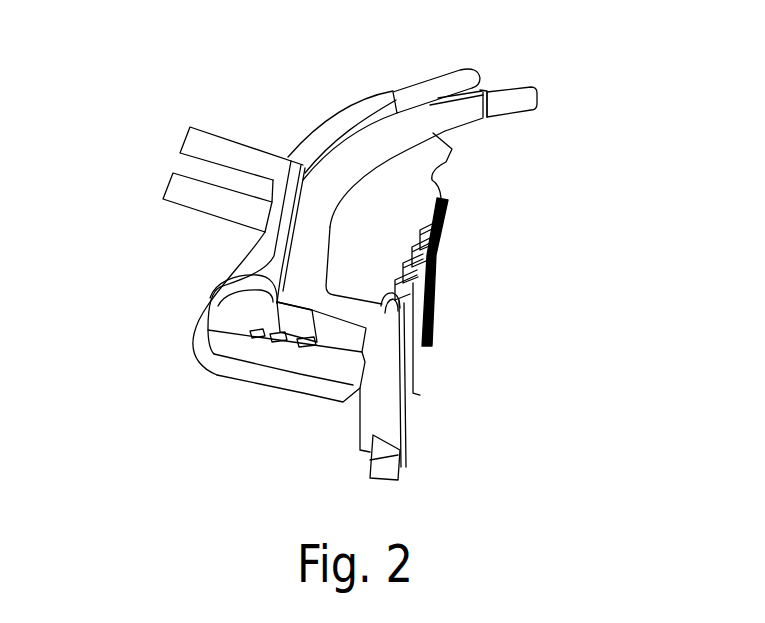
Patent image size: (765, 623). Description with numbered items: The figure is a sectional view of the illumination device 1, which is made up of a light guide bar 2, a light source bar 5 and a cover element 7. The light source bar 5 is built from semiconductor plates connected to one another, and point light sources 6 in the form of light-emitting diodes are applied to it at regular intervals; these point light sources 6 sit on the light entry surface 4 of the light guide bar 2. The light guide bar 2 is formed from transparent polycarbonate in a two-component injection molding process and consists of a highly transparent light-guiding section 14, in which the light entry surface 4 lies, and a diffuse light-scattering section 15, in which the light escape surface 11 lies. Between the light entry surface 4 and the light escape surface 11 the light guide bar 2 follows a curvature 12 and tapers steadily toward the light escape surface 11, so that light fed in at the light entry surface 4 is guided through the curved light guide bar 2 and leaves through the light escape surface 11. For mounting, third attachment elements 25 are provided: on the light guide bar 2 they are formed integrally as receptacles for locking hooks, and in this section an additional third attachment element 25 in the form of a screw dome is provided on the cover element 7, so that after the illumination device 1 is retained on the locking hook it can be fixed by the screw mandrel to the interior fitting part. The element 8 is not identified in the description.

The illumination device 1 is at (575, 172).
The light guide bar 2 is at (465, 226).
The light entry surface 4 is at (258, 287).
The light source bar 5 is at (240, 338).
The point light sources 6 is at (297, 323).
The cover element 7 is at (324, 124).
The end cap 8 is at (393, 105).
The light escape surface 11 is at (541, 93).
The curvature 12 is at (330, 215).
The light-guiding section 14 is at (485, 100).
The light-scattering section 15 is at (522, 96).
The third attachment elements 25 is at (174, 160).